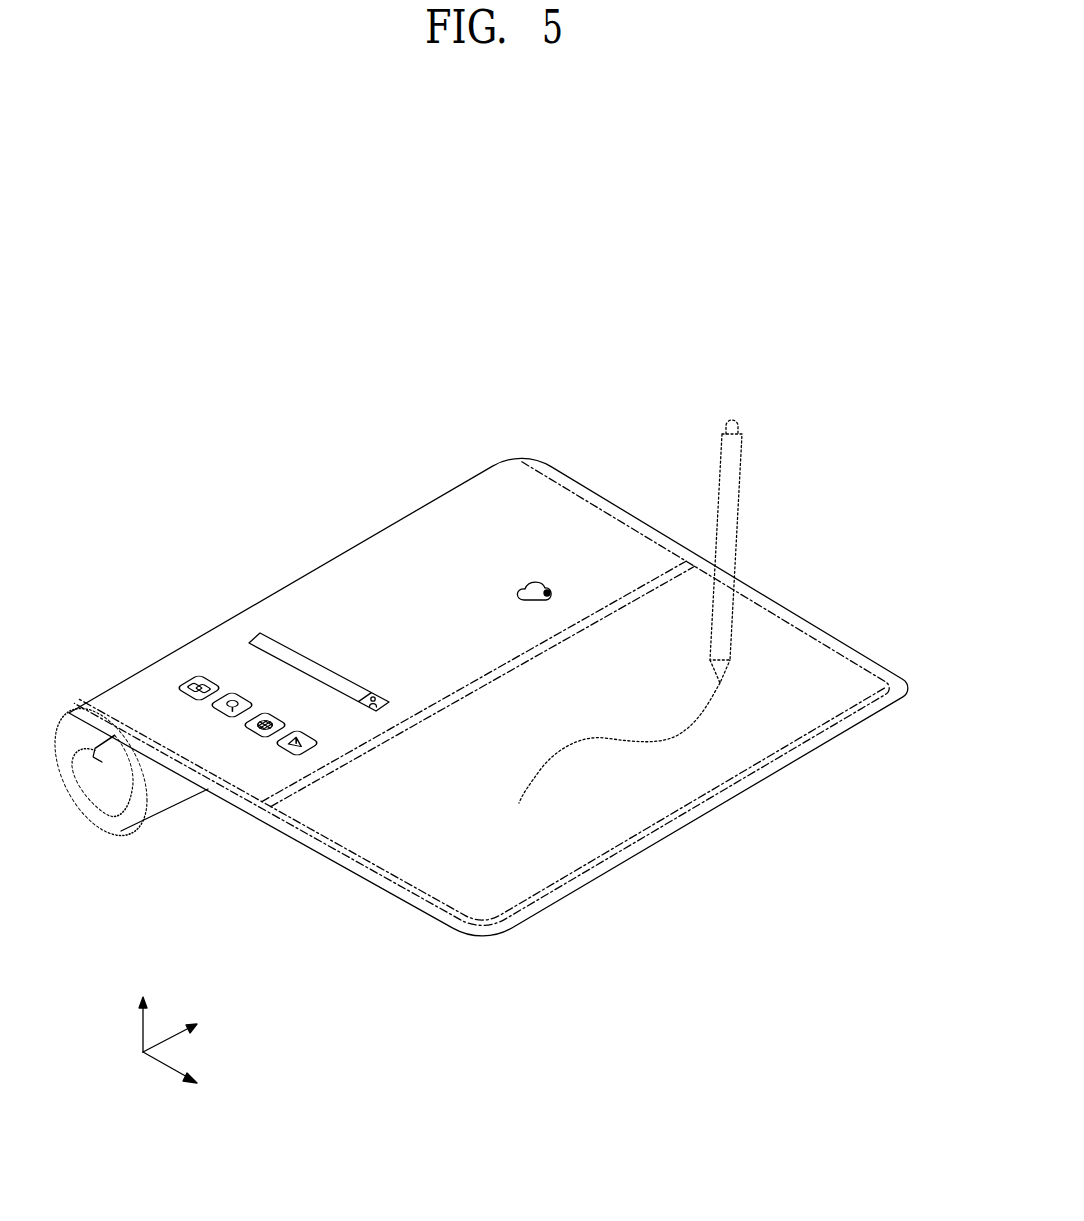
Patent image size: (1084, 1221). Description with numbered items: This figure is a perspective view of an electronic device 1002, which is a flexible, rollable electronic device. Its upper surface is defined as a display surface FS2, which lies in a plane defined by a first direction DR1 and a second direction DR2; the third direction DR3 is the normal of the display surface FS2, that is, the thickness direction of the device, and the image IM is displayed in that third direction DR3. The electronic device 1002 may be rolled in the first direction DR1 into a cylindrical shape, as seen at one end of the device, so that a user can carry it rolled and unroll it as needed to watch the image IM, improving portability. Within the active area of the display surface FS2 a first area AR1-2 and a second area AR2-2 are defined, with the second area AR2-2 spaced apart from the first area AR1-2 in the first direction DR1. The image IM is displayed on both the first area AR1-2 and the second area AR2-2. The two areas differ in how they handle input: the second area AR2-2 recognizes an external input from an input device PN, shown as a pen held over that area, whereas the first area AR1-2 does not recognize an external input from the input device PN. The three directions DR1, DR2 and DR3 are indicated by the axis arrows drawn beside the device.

The electronic device 1002 is at (883, 448).
The image IM is at (487, 501).
The first area AR1-2 is at (604, 502).
The second area AR2-2 is at (811, 627).
The input device PN is at (733, 462).
The display surface FS2 is at (360, 862).
The first direction DR1 is at (193, 1078).
The second direction DR2 is at (193, 1028).
The third direction DR3 is at (143, 1008).